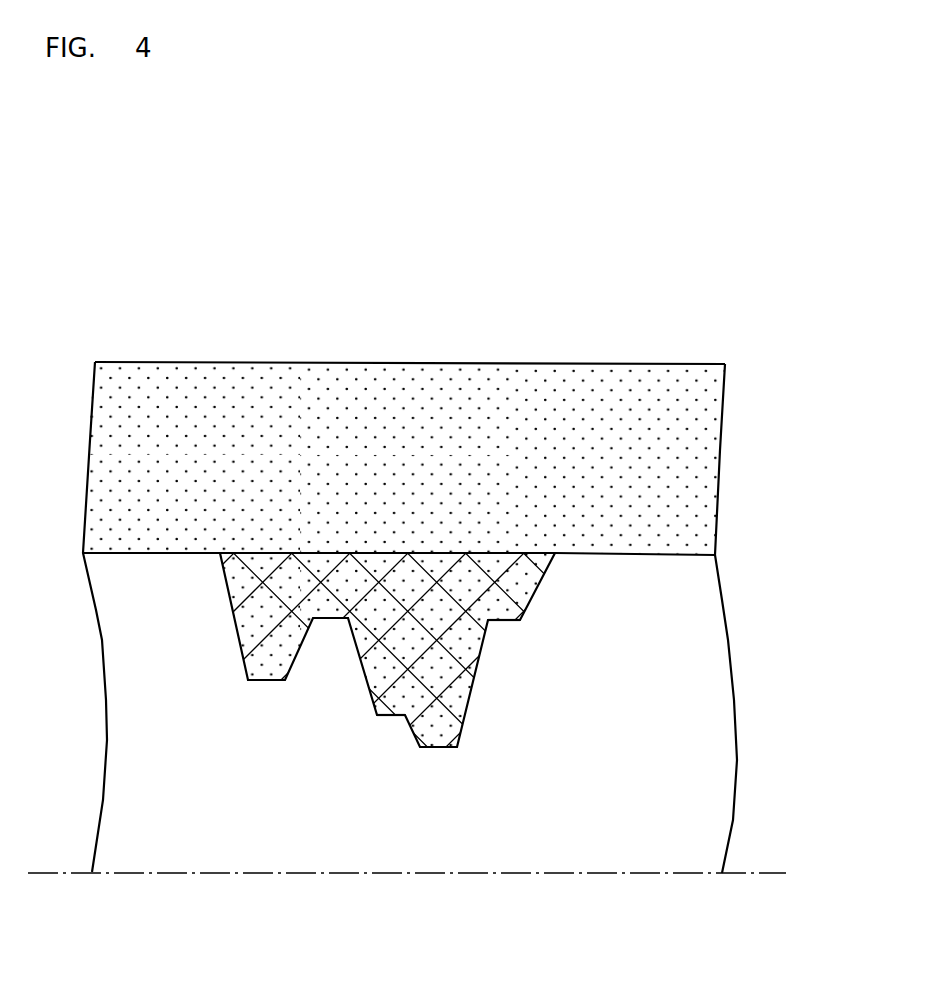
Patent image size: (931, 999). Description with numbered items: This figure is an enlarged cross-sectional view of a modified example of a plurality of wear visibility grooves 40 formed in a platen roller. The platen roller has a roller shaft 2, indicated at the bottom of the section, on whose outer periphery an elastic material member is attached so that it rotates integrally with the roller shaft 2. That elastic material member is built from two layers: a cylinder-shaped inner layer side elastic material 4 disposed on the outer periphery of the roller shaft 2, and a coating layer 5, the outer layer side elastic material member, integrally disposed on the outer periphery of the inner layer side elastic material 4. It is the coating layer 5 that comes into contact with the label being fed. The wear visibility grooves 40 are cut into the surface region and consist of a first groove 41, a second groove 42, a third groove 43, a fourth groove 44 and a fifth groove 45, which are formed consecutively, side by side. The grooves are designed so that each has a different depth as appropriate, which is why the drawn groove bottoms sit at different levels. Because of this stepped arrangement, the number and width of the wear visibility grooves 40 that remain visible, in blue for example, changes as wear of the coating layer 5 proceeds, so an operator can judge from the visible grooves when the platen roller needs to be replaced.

The roller shaft 2 is at (755, 877).
The inner layer side elastic material 4 is at (695, 768).
The coating layer 5 is at (680, 466).
The wear visibility grooves 40 is at (530, 300).
The first groove 41 is at (266, 492).
The second groove 42 is at (330, 461).
The third groove 43 is at (393, 509).
The fourth groove 44 is at (439, 525).
The fifth groove 45 is at (504, 462).